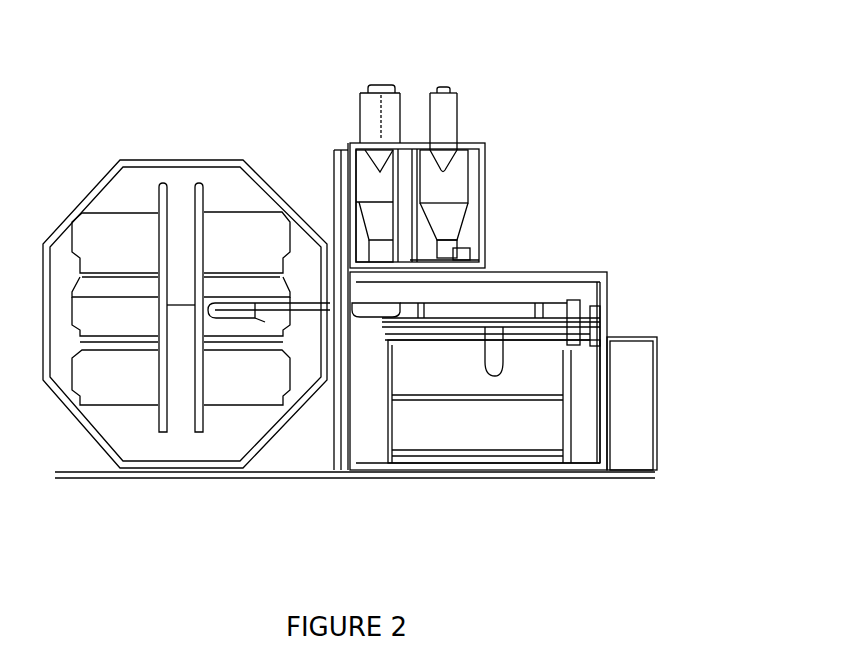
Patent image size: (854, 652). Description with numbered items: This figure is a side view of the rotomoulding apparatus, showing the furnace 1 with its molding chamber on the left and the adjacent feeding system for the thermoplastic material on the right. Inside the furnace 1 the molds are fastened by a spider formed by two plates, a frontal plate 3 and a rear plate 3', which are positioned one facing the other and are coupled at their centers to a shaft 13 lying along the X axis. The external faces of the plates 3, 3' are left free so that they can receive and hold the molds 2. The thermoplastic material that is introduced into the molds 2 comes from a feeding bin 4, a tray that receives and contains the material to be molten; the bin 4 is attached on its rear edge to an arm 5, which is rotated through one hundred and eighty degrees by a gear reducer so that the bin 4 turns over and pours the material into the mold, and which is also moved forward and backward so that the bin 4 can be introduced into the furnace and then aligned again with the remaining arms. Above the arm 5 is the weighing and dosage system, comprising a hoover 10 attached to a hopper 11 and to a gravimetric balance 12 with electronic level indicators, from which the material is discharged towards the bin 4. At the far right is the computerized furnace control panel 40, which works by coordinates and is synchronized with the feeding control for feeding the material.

The furnace 1 is at (370, 313).
The molds 2 is at (130, 235).
The frontal plate 3 is at (182, 382).
The rear plate 3' is at (145, 382).
The feeding bin 4 is at (249, 318).
The arm 5 is at (523, 299).
The hoover 10 is at (362, 100).
The hopper 11 is at (369, 190).
The gravimetric balance 12 is at (466, 259).
The shaft 13 is at (182, 303).
The furnace control panel 40 is at (647, 405).